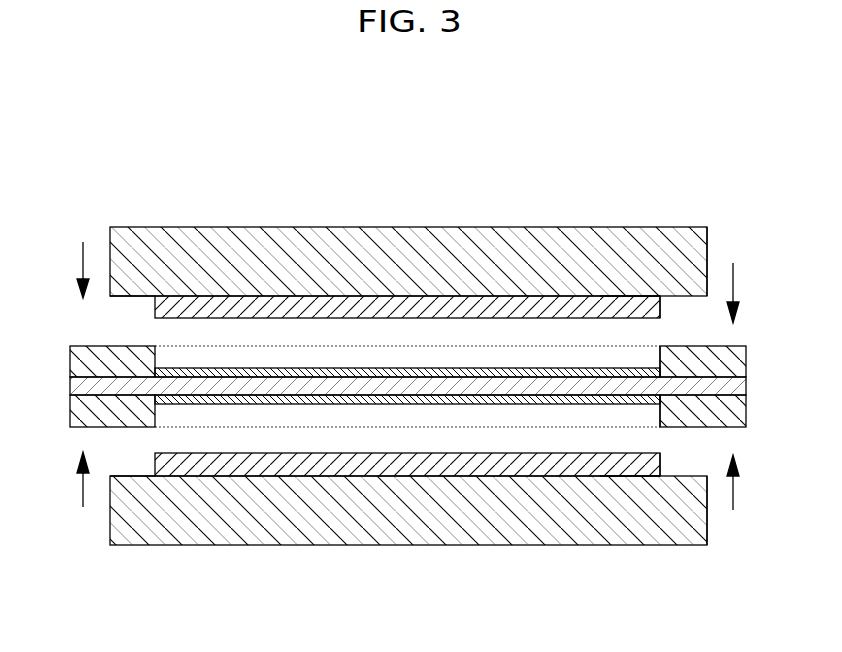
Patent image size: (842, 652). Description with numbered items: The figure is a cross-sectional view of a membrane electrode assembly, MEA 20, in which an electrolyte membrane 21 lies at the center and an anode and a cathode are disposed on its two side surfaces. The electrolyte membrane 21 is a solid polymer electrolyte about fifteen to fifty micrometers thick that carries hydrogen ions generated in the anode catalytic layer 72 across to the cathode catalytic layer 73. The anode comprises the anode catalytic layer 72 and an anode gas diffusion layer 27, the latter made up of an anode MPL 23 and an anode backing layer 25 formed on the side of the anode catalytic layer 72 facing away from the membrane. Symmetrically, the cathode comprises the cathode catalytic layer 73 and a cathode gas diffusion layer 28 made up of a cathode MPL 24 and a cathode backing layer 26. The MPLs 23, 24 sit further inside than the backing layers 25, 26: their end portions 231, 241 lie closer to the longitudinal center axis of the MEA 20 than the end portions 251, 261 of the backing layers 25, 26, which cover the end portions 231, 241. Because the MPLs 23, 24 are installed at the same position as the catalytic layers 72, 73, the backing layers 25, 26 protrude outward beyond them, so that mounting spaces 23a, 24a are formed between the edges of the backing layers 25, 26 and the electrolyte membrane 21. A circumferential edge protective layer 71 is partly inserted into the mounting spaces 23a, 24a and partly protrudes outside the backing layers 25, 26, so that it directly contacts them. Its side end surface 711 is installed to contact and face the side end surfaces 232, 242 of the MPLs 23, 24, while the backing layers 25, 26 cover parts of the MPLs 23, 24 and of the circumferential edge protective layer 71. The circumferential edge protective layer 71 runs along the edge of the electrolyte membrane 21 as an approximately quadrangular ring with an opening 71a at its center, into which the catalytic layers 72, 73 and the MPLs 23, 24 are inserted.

The MEA 20 is at (421, 122).
The electrolyte membrane 21 is at (740, 388).
The anode MPL 23 is at (434, 246).
The mounting space 23a is at (132, 298).
The end portion of anode MPL 231 is at (641, 306).
The side end surface of anode MPL 232 is at (664, 310).
The cathode MPL 24 is at (431, 529).
The mounting space 24a is at (130, 464).
The end portion of cathode MPL 241 is at (641, 466).
The side end surface of cathode MPL 242 is at (664, 465).
The anode backing layer 25 is at (402, 253).
The end portion of anode backing layer 251 is at (704, 250).
The cathode backing layer 26 is at (445, 546).
The end portion of cathode backing layer 261 is at (704, 519).
The anode gas diffusion layer 27 is at (402, 234).
The cathode gas diffusion layer 28 is at (445, 542).
The circumferential edge protective layer 71 is at (413, 389).
The opening 71a is at (513, 357).
The side end surface of circumferential edge protective layer 711 is at (657, 360).
The anode catalytic layer 72 is at (461, 371).
The cathode catalytic layer 73 is at (561, 403).